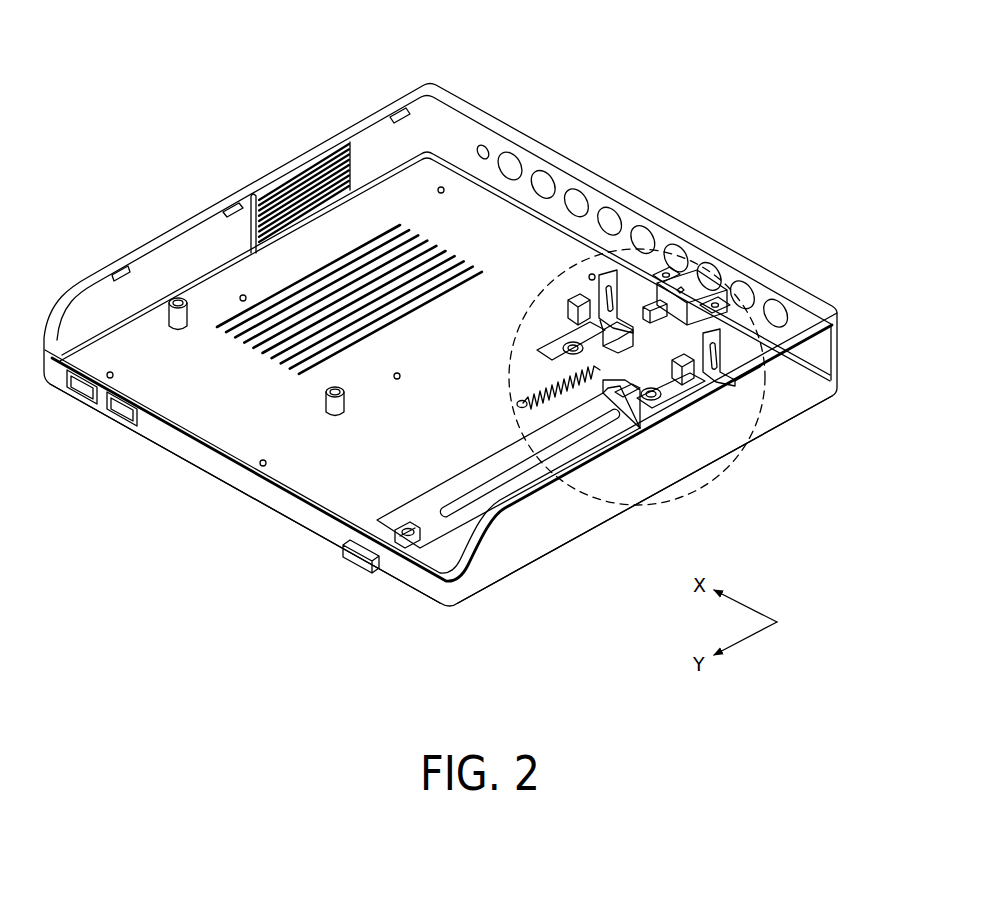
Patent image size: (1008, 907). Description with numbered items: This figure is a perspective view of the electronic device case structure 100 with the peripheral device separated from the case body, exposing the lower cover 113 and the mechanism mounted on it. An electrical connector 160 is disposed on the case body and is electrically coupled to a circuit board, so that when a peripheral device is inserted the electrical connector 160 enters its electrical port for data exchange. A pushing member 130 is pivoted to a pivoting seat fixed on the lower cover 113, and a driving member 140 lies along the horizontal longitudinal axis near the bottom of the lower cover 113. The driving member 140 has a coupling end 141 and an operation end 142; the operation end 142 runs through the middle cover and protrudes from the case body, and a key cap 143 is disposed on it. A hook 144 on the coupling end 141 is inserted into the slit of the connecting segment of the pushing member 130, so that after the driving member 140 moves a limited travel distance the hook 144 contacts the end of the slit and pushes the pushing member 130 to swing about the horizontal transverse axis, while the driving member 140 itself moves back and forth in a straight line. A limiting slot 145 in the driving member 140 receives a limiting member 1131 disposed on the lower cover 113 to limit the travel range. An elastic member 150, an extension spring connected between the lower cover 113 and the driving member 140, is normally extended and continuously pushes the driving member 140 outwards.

The electronic device case structure 100 is at (440, 317).
The lower cover 113 is at (541, 528).
The limiting member 1131 is at (622, 397).
The pushing member 130 is at (631, 297).
The driving member 140 is at (450, 471).
The coupling end 141 is at (624, 406).
The operation end 142 is at (437, 548).
The key cap 143 is at (359, 561).
The hook 144 is at (748, 372).
The limiting slot 145 is at (566, 343).
The elastic member 150 is at (553, 392).
The electrical connector 160 is at (697, 285).